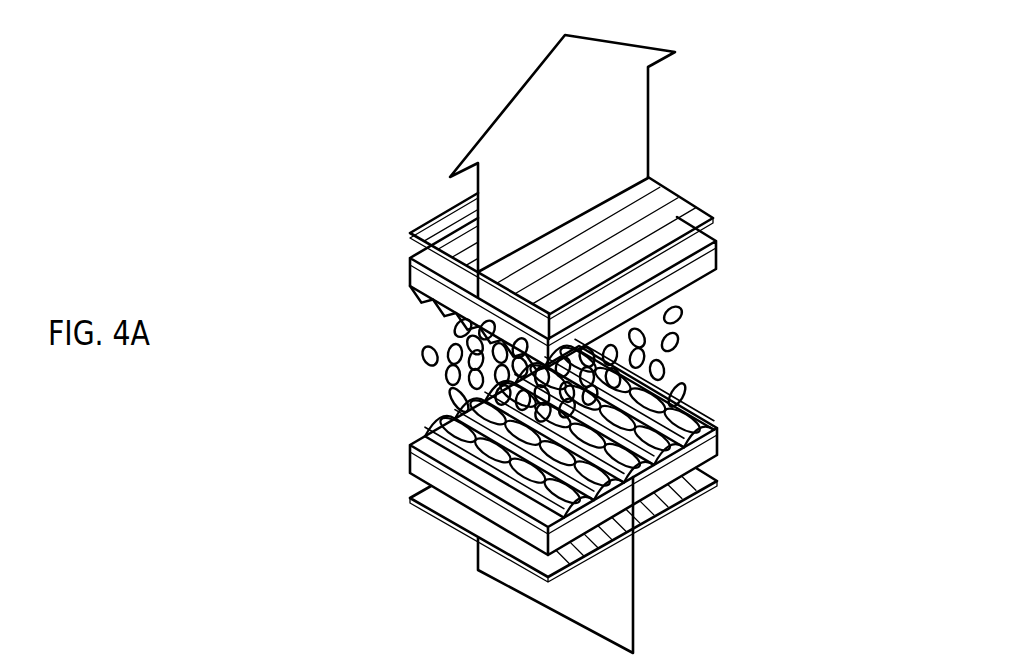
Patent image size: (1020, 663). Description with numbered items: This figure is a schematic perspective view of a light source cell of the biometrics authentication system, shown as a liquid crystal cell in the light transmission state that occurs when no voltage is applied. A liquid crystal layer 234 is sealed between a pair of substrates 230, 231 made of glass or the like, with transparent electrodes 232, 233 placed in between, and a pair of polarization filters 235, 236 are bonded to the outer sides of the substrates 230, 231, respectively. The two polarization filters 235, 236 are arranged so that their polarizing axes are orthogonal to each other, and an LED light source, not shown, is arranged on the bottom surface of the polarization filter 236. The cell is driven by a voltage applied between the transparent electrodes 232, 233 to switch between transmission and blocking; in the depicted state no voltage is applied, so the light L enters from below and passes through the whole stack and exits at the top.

The light L is at (648, 48).
The substrate 230 is at (407, 258).
The transparent electrode 232 is at (407, 278).
The liquid crystal layer 234 is at (388, 352).
The polarization filter 235 is at (693, 203).
The transparent electrode 233 is at (408, 448).
The substrate 231 is at (408, 465).
The polarization filter 236 is at (693, 490).